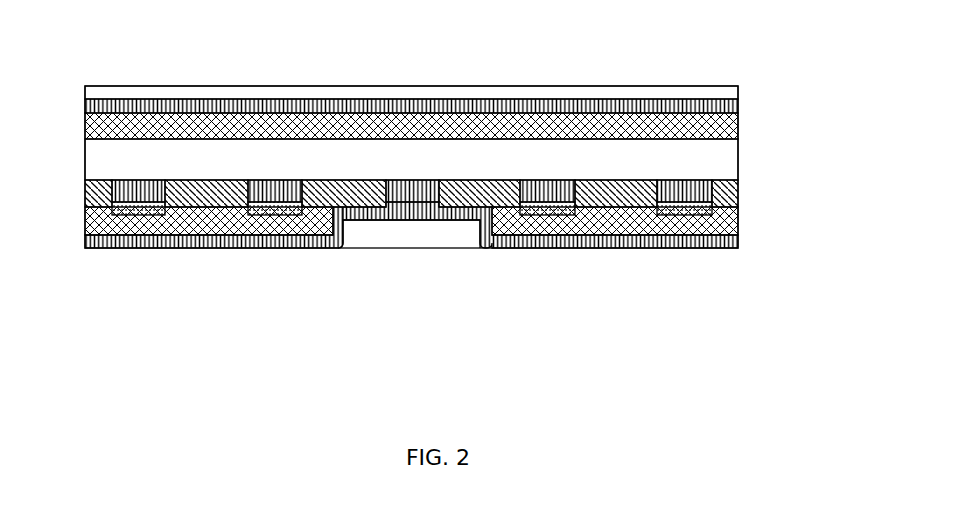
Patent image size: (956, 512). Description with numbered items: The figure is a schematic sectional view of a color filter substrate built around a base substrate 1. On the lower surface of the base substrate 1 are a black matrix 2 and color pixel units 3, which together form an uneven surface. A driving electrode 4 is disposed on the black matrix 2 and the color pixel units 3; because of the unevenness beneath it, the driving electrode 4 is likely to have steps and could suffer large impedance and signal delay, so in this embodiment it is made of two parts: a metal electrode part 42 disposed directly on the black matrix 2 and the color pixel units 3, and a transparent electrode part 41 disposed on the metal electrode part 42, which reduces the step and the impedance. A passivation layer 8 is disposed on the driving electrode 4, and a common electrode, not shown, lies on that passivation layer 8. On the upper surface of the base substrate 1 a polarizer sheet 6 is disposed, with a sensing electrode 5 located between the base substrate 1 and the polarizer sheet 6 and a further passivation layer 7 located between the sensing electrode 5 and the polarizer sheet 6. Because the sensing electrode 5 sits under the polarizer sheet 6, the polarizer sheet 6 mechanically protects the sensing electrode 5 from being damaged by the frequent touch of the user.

The base substrate 1 is at (725, 167).
The black matrix 2 is at (737, 192).
The color pixel units 3 is at (625, 200).
The driving electrode 4 is at (236, 304).
The transparent electrode part 41 is at (213, 218).
The metal electrode part 42 is at (268, 207).
The sensing electrode 5 is at (627, 125).
The polarizer sheet 6 is at (467, 92).
The passivation layer 7 is at (376, 107).
The passivation layer 8 is at (400, 221).